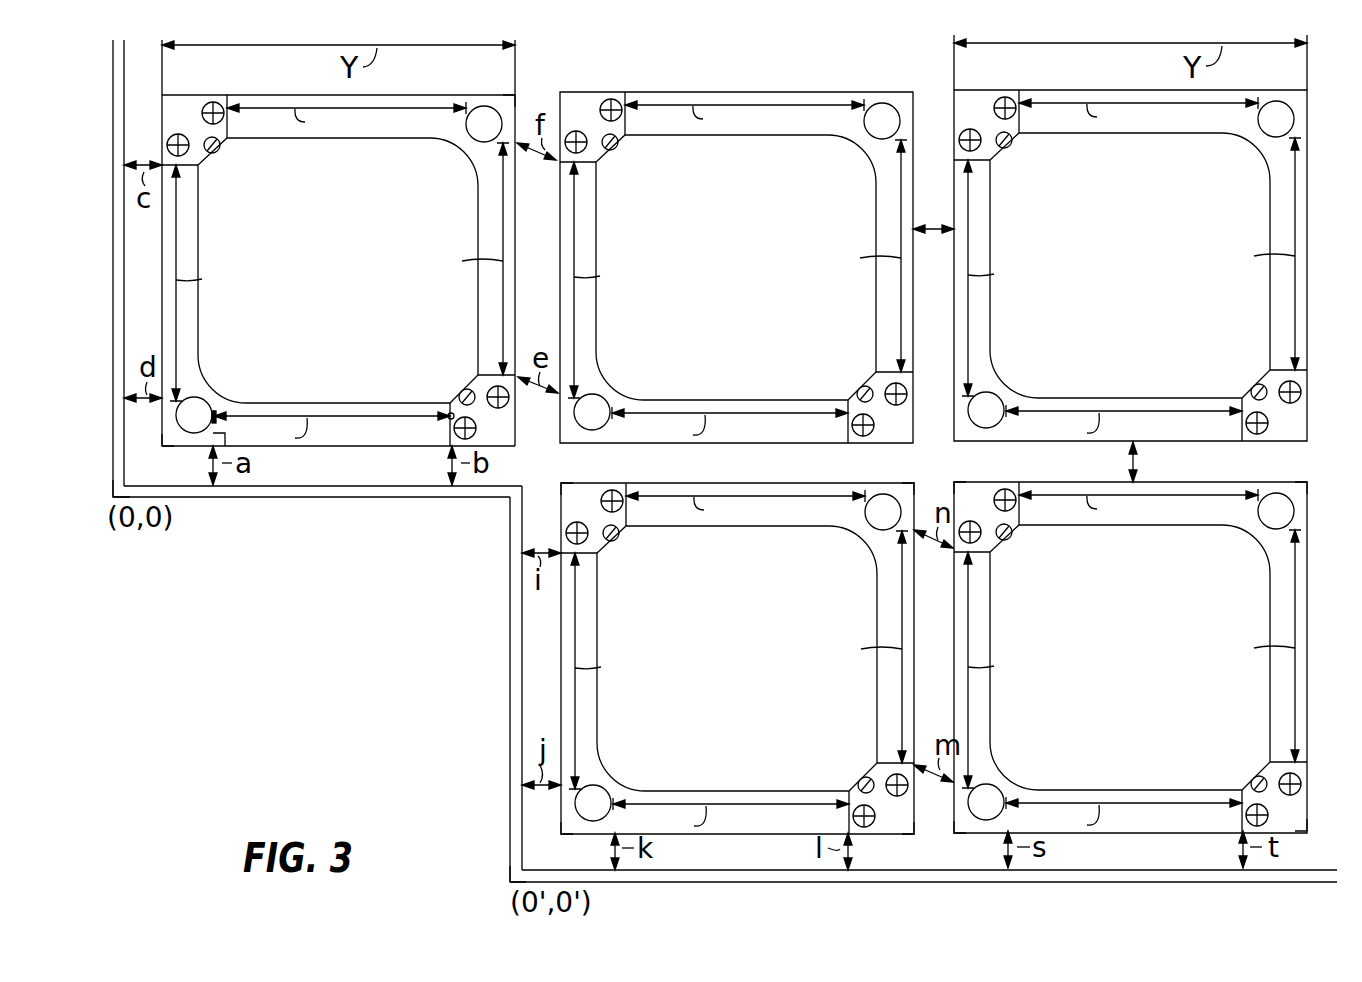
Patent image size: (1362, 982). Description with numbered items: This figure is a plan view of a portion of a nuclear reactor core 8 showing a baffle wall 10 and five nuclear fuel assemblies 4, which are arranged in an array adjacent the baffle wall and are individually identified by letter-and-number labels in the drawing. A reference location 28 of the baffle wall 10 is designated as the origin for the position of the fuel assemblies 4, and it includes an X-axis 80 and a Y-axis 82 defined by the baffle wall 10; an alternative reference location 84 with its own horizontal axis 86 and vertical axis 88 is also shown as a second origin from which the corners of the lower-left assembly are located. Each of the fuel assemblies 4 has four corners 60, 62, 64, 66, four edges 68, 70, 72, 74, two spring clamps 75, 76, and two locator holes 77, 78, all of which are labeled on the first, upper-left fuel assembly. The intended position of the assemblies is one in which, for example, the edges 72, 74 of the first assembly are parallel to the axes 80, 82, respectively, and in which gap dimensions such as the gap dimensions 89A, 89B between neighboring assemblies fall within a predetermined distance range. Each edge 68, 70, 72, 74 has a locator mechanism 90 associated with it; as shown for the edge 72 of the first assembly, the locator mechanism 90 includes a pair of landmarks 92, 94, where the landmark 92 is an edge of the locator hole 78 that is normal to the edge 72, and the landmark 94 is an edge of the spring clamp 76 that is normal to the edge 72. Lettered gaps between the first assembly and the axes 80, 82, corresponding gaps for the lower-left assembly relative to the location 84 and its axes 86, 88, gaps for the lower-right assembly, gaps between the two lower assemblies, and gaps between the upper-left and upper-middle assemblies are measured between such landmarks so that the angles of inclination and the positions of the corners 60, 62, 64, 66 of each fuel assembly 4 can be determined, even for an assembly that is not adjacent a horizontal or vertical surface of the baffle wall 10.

The nuclear fuel assemblies 4 is at (268, 90).
The nuclear reactor core 8 is at (901, 704).
The baffle wall 10 is at (294, 309).
The reference location 28 is at (113, 498).
The corner 60 is at (162, 95).
The corner 62 is at (517, 95).
The corner 64 is at (517, 445).
The corner 66 is at (162, 446).
The edge 68 is at (400, 93).
The edge 70 is at (517, 250).
The edge 72 is at (308, 447).
The edge 74 is at (162, 300).
The spring clamp 75 is at (183, 107).
The spring clamp 76 is at (490, 428).
The locator hole 77 is at (480, 105).
The locator hole 78 is at (184, 432).
The X-axis 80 is at (270, 497).
The Y-axis 82 is at (113, 342).
The location 84 is at (510, 885).
The axis 86 is at (740, 882).
The axis 88 is at (510, 712).
The gap dimension 89A is at (932, 225).
The gap dimension 89B is at (1140, 463).
The locator mechanism 90 is at (228, 392).
The landmark 92 is at (217, 405).
The landmark 94 is at (451, 420).